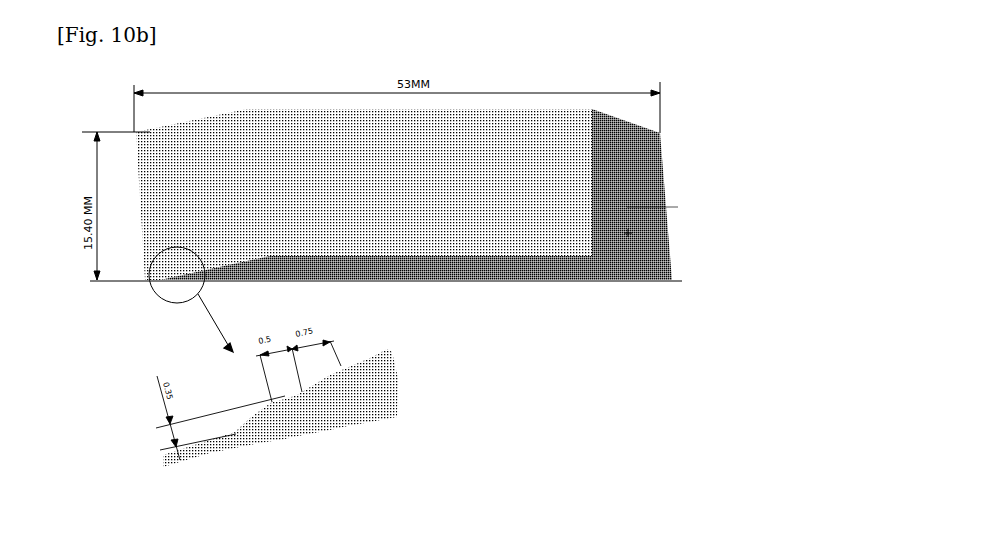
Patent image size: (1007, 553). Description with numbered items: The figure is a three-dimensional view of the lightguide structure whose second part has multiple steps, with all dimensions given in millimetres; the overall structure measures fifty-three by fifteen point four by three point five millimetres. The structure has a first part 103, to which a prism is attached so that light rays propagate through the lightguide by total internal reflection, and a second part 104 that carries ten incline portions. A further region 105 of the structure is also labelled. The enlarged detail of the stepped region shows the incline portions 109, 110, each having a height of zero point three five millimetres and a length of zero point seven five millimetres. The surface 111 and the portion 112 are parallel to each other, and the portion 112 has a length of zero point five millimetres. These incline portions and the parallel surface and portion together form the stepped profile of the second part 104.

The first part 103 is at (632, 207).
The second part 104 is at (148, 157).
The bottom layer 105 is at (500, 240).
The incline portion 109 is at (260, 430).
The incline portion 110 is at (337, 380).
The surface 111 is at (208, 462).
The portion 112 is at (292, 398).